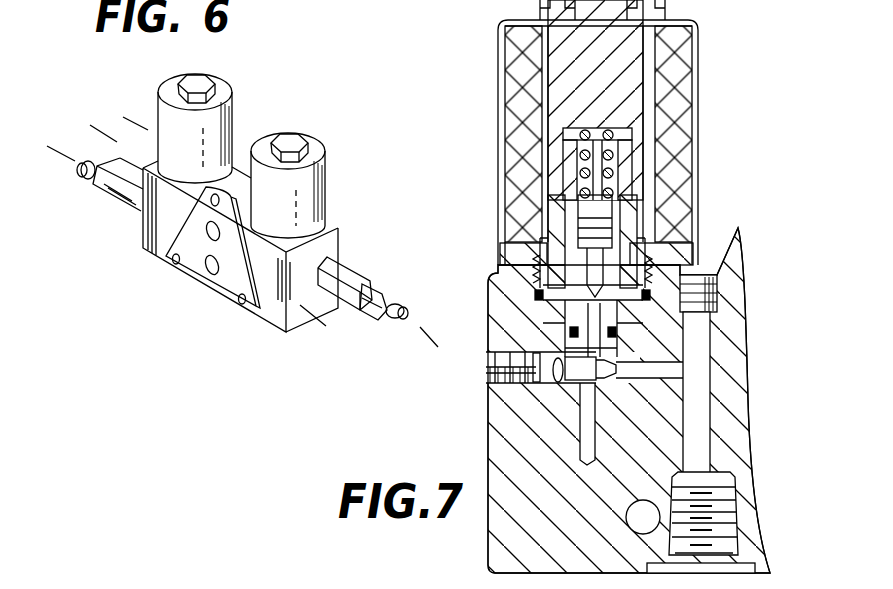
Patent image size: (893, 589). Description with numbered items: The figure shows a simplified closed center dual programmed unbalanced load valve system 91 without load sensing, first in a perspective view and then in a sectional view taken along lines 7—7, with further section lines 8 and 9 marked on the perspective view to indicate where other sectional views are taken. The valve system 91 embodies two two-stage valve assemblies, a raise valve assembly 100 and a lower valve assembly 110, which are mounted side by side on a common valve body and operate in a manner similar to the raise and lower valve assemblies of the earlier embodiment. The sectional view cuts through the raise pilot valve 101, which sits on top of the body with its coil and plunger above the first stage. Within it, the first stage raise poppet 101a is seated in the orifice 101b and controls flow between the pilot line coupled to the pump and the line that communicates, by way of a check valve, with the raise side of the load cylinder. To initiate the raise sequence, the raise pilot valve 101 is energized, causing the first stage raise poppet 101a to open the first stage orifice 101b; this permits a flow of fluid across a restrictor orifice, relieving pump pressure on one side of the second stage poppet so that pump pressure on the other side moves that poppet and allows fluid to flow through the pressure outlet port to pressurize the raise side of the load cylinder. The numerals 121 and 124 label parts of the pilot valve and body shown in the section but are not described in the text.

In FIG. 6, the valve system 91 is at (234, 361).
In FIG. 6, the raise valve assembly 100 is at (233, 104).
In FIG. 6, the lower valve assembly 110 is at (325, 174).
In FIG. 6, the section line 7— 7 is at (123, 117).
In FIG. 6, the section line 8— 8 is at (112, 112).
In FIG. 6, the section line 9— 9 is at (73, 129).
In FIG. 7, the raise pilot valve 101 is at (752, 103).
In FIG. 7, the solenoid coil 121 is at (698, 42).
In FIG. 7, the first stage raise poppet 101a is at (593, 262).
In FIG. 7, the orifice 101b is at (488, 278).
In FIG. 7, the threaded plug 124 is at (492, 280).